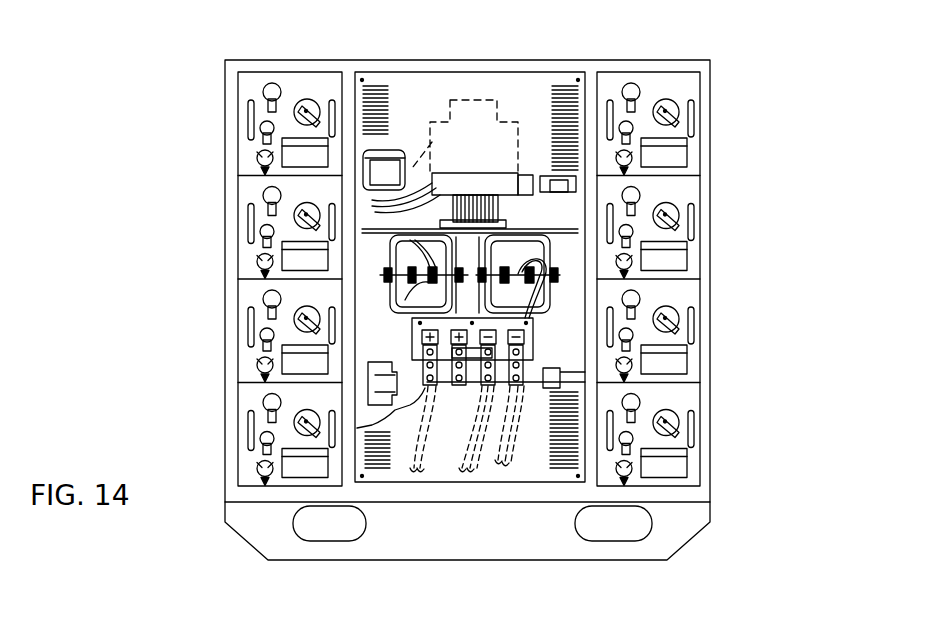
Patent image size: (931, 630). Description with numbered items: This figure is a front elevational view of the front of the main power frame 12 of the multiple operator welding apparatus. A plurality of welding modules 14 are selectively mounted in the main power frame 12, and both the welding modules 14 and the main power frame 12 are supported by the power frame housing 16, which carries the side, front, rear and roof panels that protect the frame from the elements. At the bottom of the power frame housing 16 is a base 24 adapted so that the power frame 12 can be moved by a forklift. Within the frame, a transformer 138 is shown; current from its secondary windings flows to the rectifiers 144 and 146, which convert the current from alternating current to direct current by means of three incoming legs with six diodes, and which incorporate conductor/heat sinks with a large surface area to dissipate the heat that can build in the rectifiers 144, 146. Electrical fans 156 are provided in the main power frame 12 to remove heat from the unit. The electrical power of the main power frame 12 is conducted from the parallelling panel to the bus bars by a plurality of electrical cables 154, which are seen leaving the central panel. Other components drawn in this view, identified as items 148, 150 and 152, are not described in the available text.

The main power frame 12 is at (166, 119).
The welding module 14 is at (248, 292).
The power frame housing 16 is at (353, 103).
The base 24 is at (553, 549).
The transformer 138 is at (498, 100).
The rectifier 144 is at (385, 377).
The rectifier 146 is at (553, 277).
The relay 148 is at (412, 268).
The relay 150 is at (547, 249).
The terminal block 152 is at (528, 346).
The electrical cable 154 is at (478, 468).
The electrical fan 156 is at (392, 168).